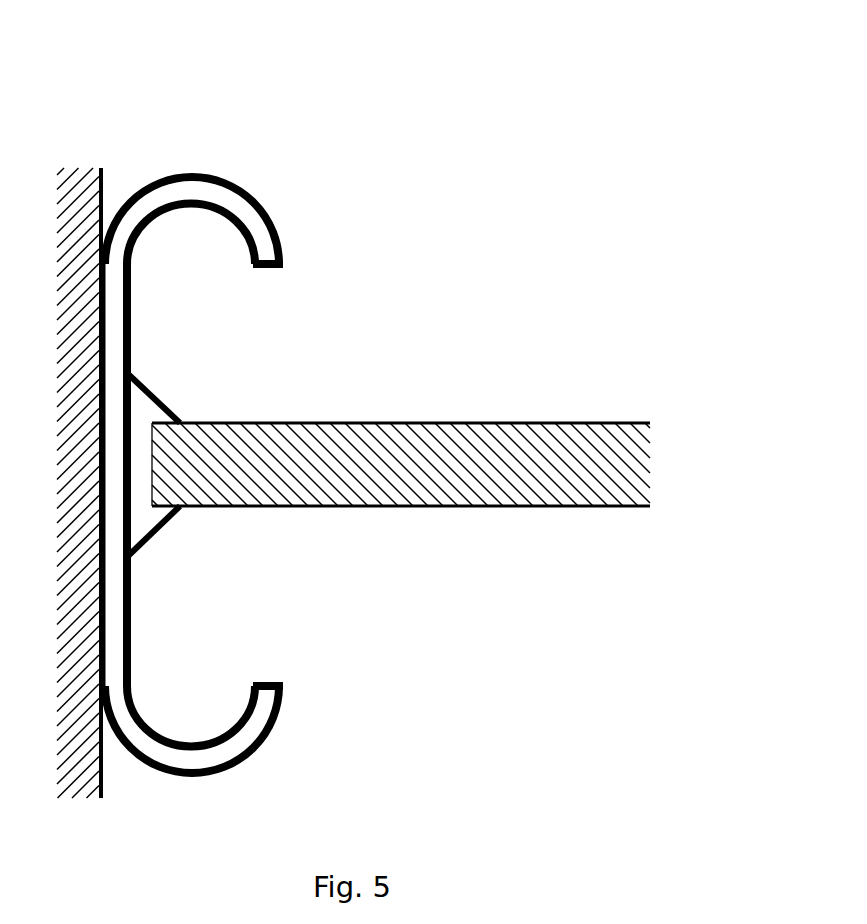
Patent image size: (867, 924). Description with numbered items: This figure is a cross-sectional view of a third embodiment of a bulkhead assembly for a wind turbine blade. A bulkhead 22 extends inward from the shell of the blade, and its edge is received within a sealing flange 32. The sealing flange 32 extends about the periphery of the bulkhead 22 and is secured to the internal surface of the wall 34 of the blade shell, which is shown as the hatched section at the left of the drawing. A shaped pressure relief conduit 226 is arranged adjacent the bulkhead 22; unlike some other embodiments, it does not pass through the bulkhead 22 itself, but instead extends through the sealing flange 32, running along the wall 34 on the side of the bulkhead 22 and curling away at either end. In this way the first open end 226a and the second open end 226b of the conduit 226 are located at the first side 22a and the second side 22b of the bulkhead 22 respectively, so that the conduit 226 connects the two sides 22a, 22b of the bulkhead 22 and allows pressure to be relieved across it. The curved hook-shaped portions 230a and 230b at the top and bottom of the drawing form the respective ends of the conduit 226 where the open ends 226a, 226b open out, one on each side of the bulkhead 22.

The bulkhead 22 is at (647, 423).
The first side of the bulkhead 22a is at (583, 423).
The second side of the bulkhead 22b is at (575, 507).
The sealing flange 32 is at (156, 534).
The wall 34 is at (103, 166).
The pressure relief conduit 226 is at (128, 332).
The first open end of the conduit 226a is at (270, 268).
The second open end of the conduit 226b is at (268, 684).
The upper hook outer wall 230a is at (223, 177).
The lower hook outer wall 230b is at (247, 757).